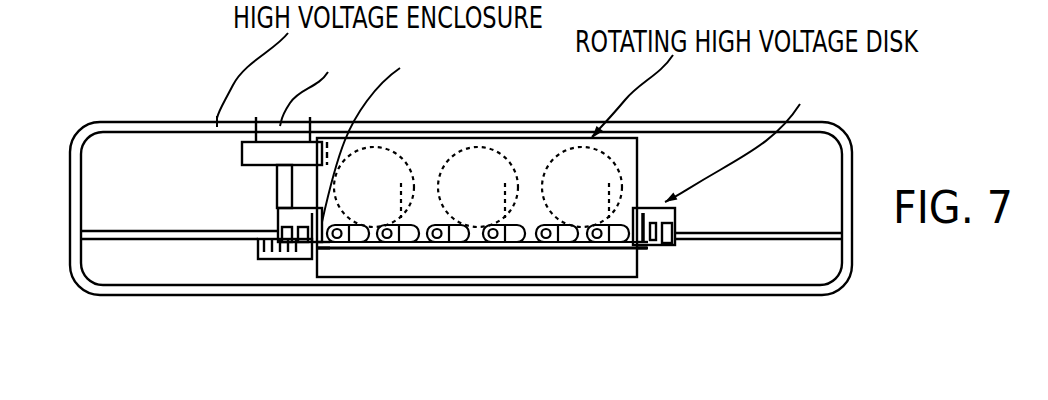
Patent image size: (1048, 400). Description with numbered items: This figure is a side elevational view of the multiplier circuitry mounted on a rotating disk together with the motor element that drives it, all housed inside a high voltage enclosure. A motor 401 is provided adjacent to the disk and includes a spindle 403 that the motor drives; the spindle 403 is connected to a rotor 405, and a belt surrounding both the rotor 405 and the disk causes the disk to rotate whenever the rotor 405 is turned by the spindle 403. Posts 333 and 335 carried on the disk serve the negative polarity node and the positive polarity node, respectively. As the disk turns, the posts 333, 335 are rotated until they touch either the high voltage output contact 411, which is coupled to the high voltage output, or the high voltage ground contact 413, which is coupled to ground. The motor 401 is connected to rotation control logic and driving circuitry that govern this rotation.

The motor 401 is at (257, 155).
The spindle 403 is at (280, 193).
The high voltage ground contact 413 is at (290, 218).
The rotor 405 is at (283, 245).
The high voltage output contact 411 is at (675, 222).
The post 333 is at (645, 241).
The post 335 is at (320, 246).